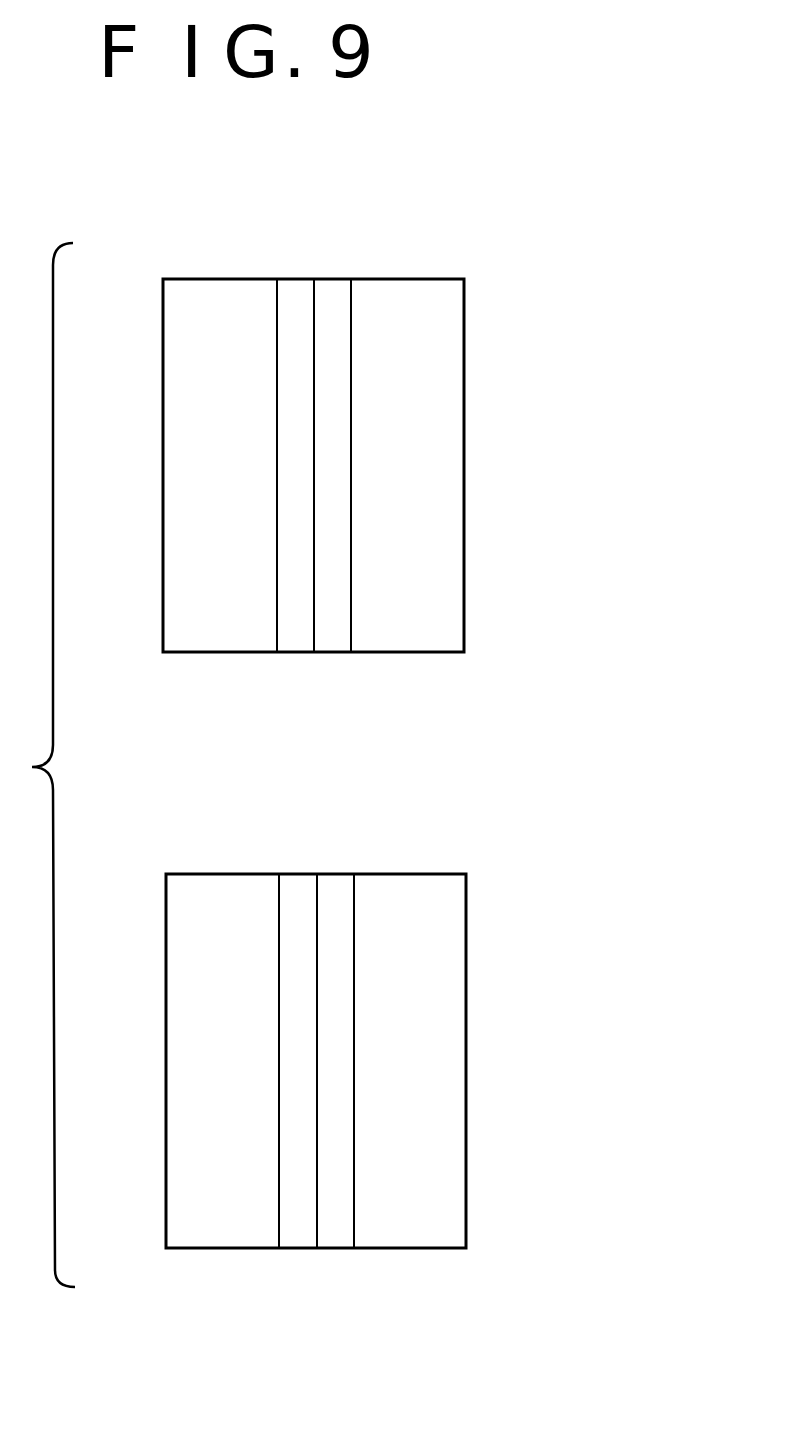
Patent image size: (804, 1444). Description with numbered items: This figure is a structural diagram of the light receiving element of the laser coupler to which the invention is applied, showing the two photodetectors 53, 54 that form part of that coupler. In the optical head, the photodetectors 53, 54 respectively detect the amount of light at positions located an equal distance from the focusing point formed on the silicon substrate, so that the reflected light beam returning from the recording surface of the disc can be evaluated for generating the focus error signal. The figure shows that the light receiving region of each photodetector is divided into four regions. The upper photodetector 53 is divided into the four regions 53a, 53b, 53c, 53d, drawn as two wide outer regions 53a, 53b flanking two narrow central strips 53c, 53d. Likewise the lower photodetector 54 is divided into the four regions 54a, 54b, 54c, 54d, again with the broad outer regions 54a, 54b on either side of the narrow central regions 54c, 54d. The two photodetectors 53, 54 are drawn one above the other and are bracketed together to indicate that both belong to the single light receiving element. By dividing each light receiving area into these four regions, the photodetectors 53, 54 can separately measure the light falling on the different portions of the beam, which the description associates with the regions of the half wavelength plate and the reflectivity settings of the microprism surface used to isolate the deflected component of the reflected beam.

The photodetector 53 is at (310, 652).
The first region of photodetector 53 53a is at (220, 465).
The second region of photodetector 53 53b is at (407, 465).
The third region of photodetector 53 53c is at (288, 290).
The fourth region of photodetector 53 53d is at (333, 290).
The photodetector 54 is at (307, 1248).
The first region of photodetector 54 54a is at (222, 1061).
The second region of photodetector 54 54b is at (410, 1061).
The third region of photodetector 54 54c is at (293, 890).
The fourth region of photodetector 54 54d is at (335, 887).